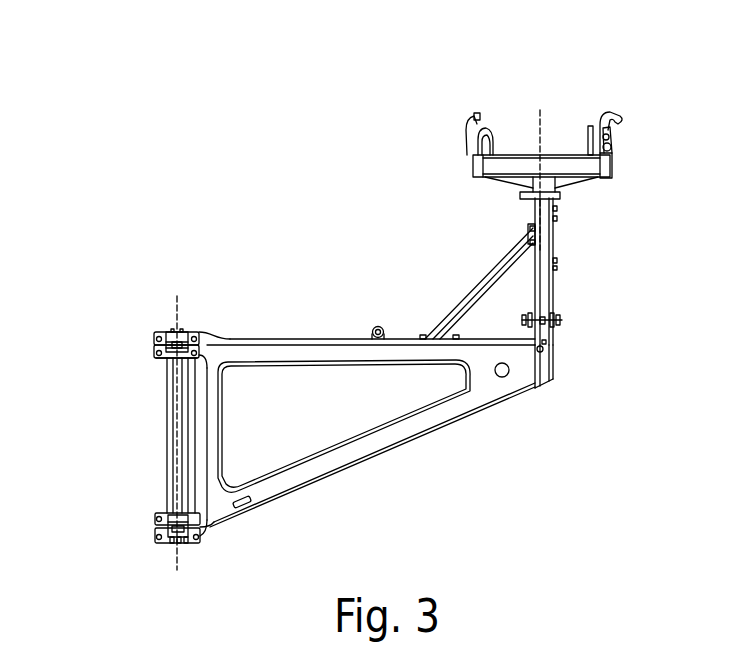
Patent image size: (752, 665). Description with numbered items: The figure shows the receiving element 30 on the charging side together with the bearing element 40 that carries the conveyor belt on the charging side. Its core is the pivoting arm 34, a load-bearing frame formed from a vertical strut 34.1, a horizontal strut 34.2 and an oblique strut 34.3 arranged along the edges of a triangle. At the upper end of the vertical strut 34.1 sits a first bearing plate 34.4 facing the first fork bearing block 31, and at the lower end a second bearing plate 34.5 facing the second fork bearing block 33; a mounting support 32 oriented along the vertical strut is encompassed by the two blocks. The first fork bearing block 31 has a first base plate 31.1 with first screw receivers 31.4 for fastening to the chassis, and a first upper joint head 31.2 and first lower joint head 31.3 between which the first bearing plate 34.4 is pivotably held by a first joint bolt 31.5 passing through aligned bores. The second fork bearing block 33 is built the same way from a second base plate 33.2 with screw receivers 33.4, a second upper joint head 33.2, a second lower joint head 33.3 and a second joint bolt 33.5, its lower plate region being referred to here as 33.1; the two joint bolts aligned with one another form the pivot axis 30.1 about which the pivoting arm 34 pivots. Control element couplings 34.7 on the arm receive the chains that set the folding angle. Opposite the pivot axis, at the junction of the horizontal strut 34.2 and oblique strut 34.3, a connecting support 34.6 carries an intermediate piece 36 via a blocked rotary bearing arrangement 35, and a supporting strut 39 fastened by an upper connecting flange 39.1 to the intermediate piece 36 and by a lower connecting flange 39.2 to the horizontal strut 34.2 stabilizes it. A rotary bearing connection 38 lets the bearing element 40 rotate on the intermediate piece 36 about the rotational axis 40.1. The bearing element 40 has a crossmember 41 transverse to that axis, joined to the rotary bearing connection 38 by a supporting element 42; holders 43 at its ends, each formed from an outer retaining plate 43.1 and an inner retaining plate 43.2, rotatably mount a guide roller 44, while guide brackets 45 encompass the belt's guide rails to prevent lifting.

The receiving element on the charging side 30 is at (164, 168).
The pivot axis on the charging side 30.1 is at (176, 296).
The first fork bearing block 31 is at (165, 333).
The first base plate 31.1 is at (160, 336).
The first upper joint head 31.2 is at (190, 333).
The first lower joint head 31.3 is at (158, 343).
The first screw receivers 31.4 is at (160, 356).
The first joint bolt 31.5 is at (182, 330).
The mounting support 32 is at (172, 393).
The second fork bearing block 33 is at (160, 538).
The lower bracket plate 33.1 is at (157, 524).
The second base plate / second upper joint head 33.2 is at (160, 515).
The second lower joint head 33.3 is at (158, 544).
The screw receivers 33.4 is at (158, 520).
The second joint bolt 33.5 is at (180, 544).
The pivoting arm on the charging side 34 is at (317, 258).
The vertical strut 34.1 is at (205, 430).
The horizontal strut 34.2 is at (338, 340).
The oblique strut 34.3 is at (367, 450).
The first bearing plate 34.4 is at (202, 337).
The second bearing plate 34.5 is at (201, 537).
The connecting support 34.6 is at (545, 370).
The control element couplings 34.7 is at (248, 507).
The blocked rotary bearing arrangement 35 is at (563, 320).
The intermediate piece 36 is at (543, 281).
The rotary bearing connection on the charging side 38 is at (560, 198).
The supporting strut 39 is at (480, 288).
The upper connecting flange 39.1 is at (532, 228).
The lower connecting flange 39.2 is at (425, 339).
The bearing element on the charging side 40 is at (418, 172).
The rotational axis on the charging side 40.1 is at (540, 112).
The crossmember 41 is at (490, 167).
The supporting element 42 is at (562, 190).
The holders 43 is at (627, 111).
The outer retaining plate 43.1 is at (611, 171).
The inner retaining plate 43.2 is at (614, 149).
The guide roller 44 is at (613, 139).
The guide brackets 45 is at (615, 112).